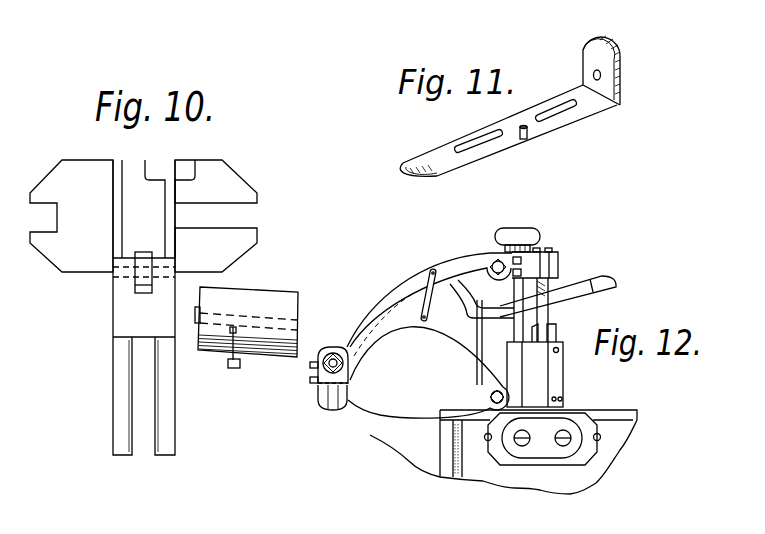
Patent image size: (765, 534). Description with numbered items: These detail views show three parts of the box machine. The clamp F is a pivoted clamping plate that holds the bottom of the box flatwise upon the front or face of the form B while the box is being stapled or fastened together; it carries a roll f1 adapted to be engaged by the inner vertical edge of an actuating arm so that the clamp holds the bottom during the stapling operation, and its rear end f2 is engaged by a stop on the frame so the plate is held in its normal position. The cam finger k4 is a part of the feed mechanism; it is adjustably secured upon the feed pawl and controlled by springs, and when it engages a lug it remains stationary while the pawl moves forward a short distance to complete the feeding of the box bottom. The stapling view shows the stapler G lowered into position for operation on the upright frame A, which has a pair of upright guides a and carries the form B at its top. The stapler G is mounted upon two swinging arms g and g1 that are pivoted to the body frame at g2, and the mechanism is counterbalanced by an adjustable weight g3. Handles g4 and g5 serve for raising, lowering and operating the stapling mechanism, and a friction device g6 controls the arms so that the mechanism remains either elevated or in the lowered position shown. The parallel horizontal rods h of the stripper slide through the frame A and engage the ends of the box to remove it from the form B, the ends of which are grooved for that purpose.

In FIG. 10, the clamping plate F is at (133, 173).
In FIG. 10, the roll f1 is at (147, 285).
In FIG. 10, the rear end of the clamping plate f2 is at (127, 455).
In FIG. 11, the cam finger k4 is at (417, 163).
In FIG. 12, the swinging arm g is at (380, 288).
In FIG. 12, the swinging arm g1 is at (412, 333).
In FIG. 12, the pivot g2 is at (312, 367).
In FIG. 12, the adjustable weight g3 is at (243, 297).
In FIG. 12, the handle g4 is at (533, 213).
In FIG. 12, the handle g5 is at (603, 277).
In FIG. 12, the friction device g6 is at (318, 395).
In FIG. 12, the stapler G is at (538, 360).
In FIG. 12, the form B is at (553, 432).
In FIG. 12, the rods h is at (600, 438).
In FIG. 12, the upright guides a is at (458, 470).
In FIG. 12, the frame A is at (603, 470).